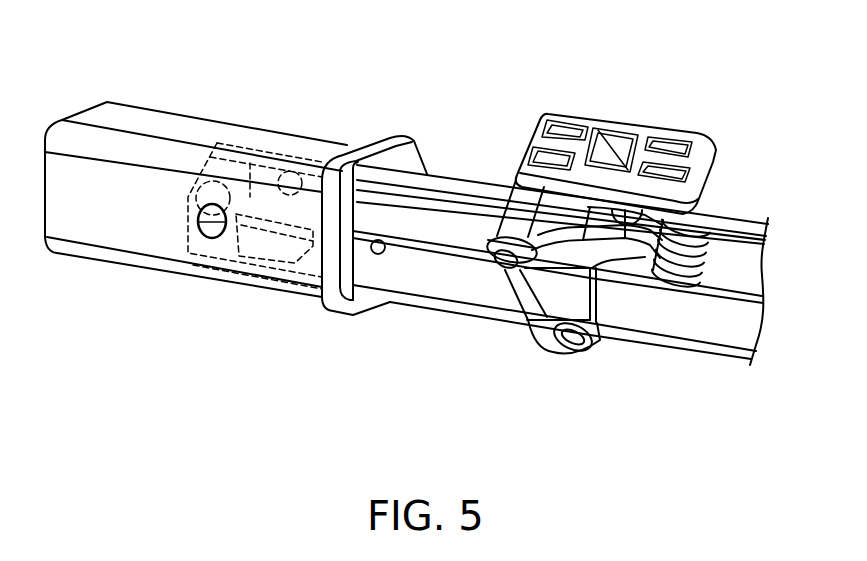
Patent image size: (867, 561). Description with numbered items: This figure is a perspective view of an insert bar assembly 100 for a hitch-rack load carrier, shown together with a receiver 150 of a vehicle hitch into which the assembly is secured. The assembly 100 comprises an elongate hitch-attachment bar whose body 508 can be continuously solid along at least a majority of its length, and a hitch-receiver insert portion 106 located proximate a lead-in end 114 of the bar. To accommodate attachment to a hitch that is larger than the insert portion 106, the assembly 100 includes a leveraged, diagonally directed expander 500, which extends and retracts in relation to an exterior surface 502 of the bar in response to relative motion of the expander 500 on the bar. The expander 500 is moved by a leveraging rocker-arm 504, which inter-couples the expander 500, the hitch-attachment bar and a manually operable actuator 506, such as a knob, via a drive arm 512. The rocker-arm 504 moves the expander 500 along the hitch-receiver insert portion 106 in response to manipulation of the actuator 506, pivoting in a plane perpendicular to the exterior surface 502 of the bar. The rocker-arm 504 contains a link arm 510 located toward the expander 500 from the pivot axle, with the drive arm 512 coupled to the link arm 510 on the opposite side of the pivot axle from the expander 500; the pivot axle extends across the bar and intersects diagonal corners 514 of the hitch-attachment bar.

The insert bar assembly 100 is at (406, 248).
The receiver 150 is at (118, 115).
The lead-in end 114 is at (227, 143).
The hitch-receiver insert portion 106 is at (218, 263).
The exterior surface 502 is at (430, 180).
The expander 500 is at (478, 207).
The body 508 is at (423, 290).
The manually operable actuator 506 is at (624, 132).
The link arm 510 is at (522, 266).
The drive arm 512 is at (609, 268).
The leveraging rocker-arm 504 is at (550, 290).
The diagonal corners 514 is at (720, 357).